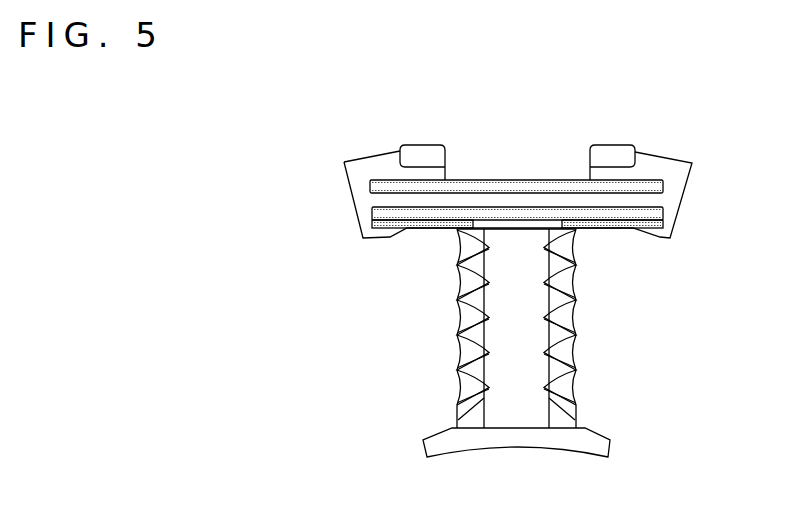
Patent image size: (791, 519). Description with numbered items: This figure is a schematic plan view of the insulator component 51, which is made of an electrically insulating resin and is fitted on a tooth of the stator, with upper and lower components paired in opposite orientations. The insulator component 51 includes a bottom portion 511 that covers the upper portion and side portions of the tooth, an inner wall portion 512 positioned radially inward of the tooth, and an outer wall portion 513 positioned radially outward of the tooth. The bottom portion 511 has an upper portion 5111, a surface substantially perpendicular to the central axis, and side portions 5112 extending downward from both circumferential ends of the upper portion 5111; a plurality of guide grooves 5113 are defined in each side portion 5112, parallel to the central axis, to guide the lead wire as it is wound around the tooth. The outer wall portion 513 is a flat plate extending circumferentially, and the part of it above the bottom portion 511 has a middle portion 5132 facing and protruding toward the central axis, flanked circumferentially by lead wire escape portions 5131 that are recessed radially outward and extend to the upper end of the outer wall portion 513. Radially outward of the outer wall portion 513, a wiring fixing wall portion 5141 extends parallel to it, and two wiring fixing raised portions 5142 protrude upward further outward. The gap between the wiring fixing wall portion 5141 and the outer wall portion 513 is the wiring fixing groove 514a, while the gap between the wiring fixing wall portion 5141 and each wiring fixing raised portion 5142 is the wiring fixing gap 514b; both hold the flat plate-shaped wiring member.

The insulator component 51 is at (241, 66).
The bottom portion 511 is at (333, 374).
The upper portion 5111 is at (512, 280).
The side portions 5112 is at (460, 330).
The guide grooves 5113 is at (448, 383).
The inner wall portion 512 is at (425, 452).
The outer wall portion 513 is at (668, 216).
The lead wire escape portions 5131 is at (420, 226).
The middle portion 5132 is at (552, 277).
The wiring fixing wall portion 5141 is at (375, 187).
The wiring fixing groove 514a is at (378, 201).
The wiring fixing gap 514b is at (408, 173).
The wiring fixing raised portions 5142 is at (418, 155).